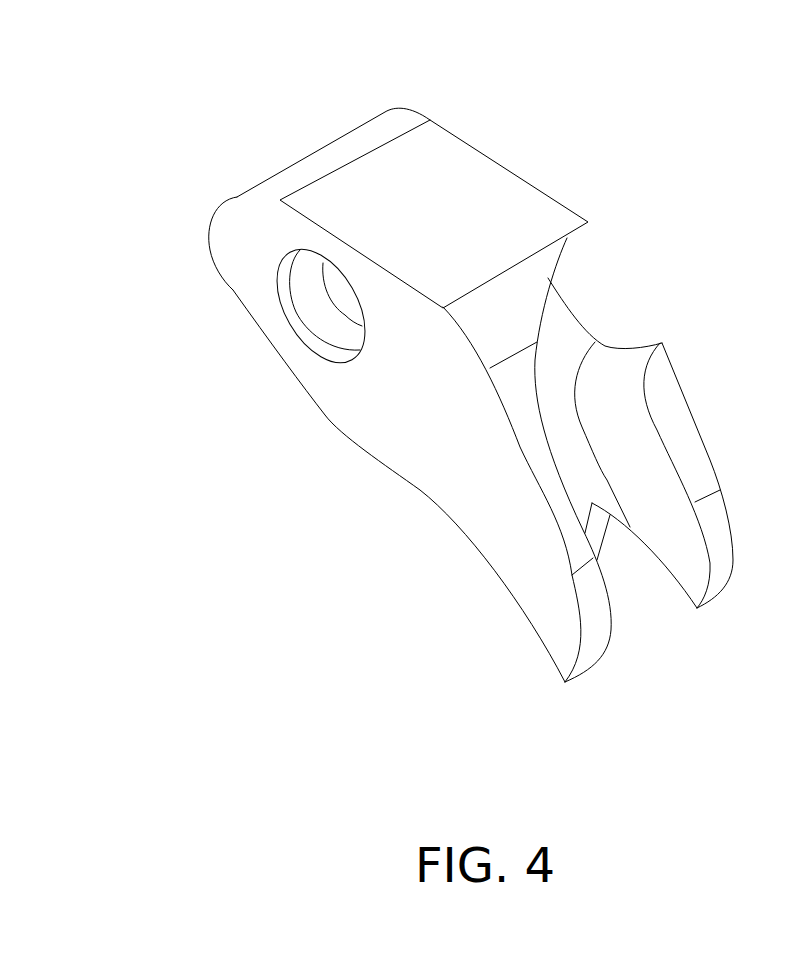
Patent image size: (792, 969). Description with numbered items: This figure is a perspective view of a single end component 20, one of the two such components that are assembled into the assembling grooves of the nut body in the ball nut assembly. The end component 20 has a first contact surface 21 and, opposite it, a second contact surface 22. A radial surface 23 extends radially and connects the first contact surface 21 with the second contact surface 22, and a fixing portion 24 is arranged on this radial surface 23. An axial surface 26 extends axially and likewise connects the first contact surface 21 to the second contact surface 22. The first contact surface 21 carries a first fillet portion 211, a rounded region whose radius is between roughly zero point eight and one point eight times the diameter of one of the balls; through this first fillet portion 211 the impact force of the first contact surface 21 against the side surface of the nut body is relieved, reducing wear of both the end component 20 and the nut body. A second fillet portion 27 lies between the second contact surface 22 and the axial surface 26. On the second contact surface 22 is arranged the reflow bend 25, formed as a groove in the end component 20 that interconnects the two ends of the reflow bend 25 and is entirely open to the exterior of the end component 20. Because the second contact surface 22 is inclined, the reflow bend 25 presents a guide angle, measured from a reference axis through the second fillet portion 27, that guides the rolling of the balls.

The end component 20 is at (85, 68).
The first contact surface 21 is at (218, 225).
The first fillet portion 211 is at (237, 197).
The second contact surface 22 is at (667, 380).
The radial surface 23 is at (373, 392).
The fixing portion 24 is at (320, 300).
The reflow bend 25 is at (573, 455).
The axial surface 26 is at (475, 178).
The second fillet portion 27 is at (507, 303).